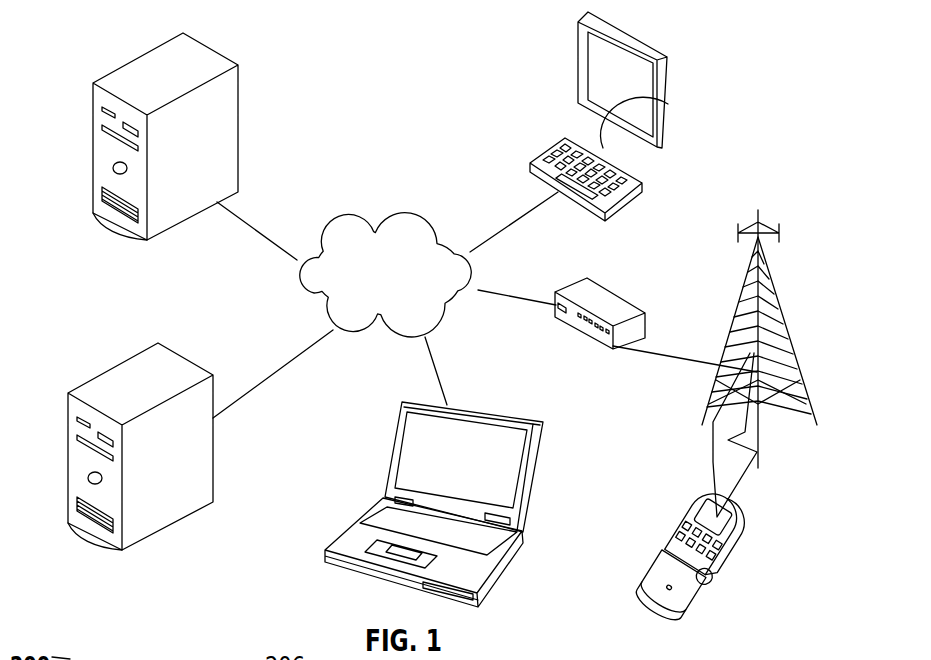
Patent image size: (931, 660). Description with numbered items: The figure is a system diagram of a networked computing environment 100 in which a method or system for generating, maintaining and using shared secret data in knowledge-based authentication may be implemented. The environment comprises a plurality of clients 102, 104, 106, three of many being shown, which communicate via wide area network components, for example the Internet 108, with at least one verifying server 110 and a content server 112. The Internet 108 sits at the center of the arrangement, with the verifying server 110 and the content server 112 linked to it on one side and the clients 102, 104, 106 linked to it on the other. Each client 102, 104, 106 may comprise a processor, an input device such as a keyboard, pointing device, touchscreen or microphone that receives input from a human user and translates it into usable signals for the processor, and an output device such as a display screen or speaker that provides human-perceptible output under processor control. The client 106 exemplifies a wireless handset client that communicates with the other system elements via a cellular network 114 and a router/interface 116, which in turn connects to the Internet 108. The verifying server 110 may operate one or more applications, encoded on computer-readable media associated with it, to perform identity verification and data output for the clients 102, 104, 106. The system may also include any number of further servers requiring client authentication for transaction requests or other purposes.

The networked computing environment 100 is at (122, 48).
The client 102 is at (537, 470).
The client 104 is at (668, 95).
The client 106 is at (740, 535).
The Internet 108 is at (408, 288).
The verifying server 110 is at (238, 135).
The content server 112 is at (213, 455).
The cellular network 114 is at (790, 310).
The router/interface 116 is at (617, 292).